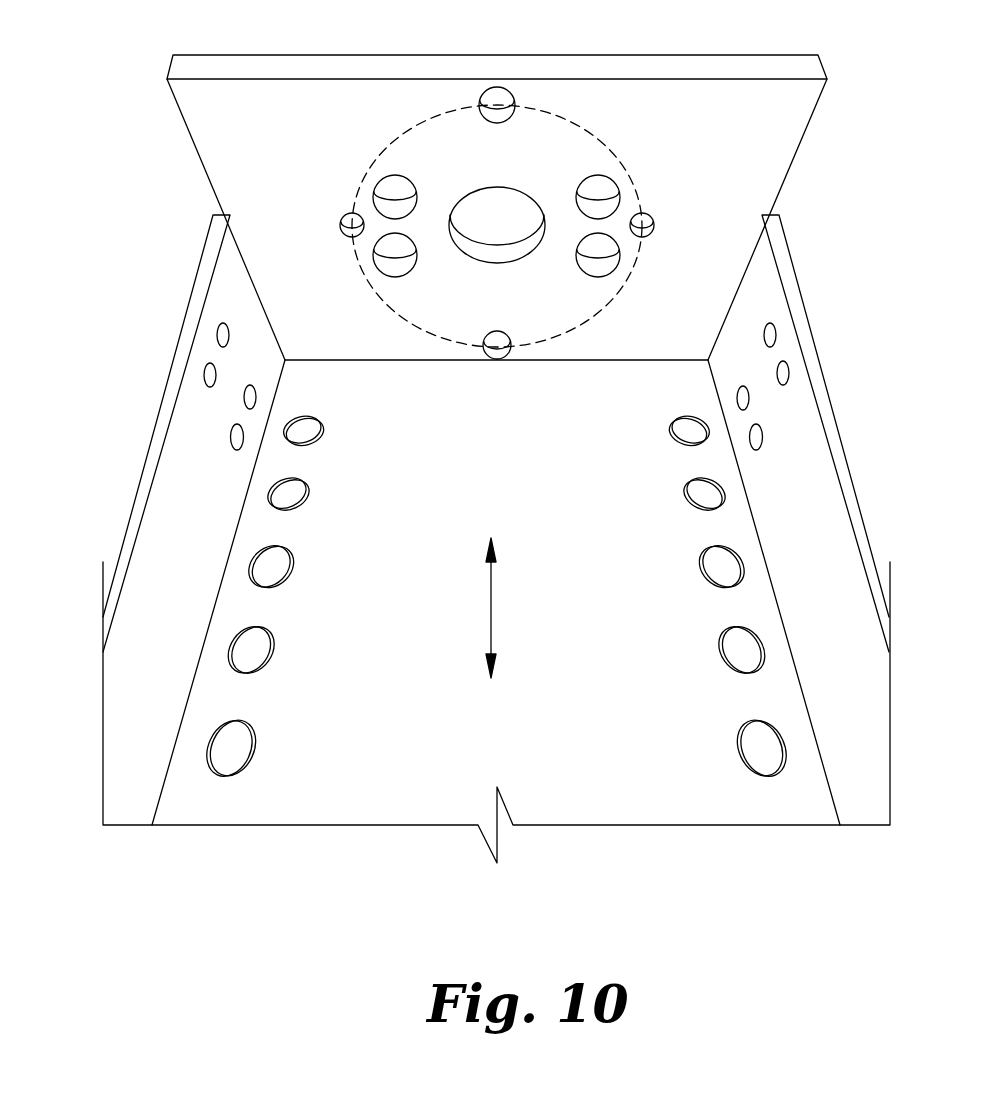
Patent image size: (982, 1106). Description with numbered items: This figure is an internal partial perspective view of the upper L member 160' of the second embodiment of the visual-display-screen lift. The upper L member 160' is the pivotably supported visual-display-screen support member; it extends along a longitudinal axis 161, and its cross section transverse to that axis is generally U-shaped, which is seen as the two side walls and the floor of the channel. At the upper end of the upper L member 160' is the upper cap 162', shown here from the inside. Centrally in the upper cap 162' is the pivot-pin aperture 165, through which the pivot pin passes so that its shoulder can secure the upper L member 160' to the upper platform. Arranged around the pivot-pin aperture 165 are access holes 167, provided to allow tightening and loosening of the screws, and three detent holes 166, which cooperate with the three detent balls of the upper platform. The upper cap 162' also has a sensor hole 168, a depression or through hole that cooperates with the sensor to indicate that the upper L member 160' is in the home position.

The upper L member 160' is at (461, 539).
The longitudinal axis 161 is at (518, 608).
The upper cap 162' is at (454, 207).
The pivot-pin aperture 165 is at (500, 187).
The detent holes 166 is at (343, 232).
The access holes 167 is at (382, 200).
The sensor hole 168 is at (497, 100).